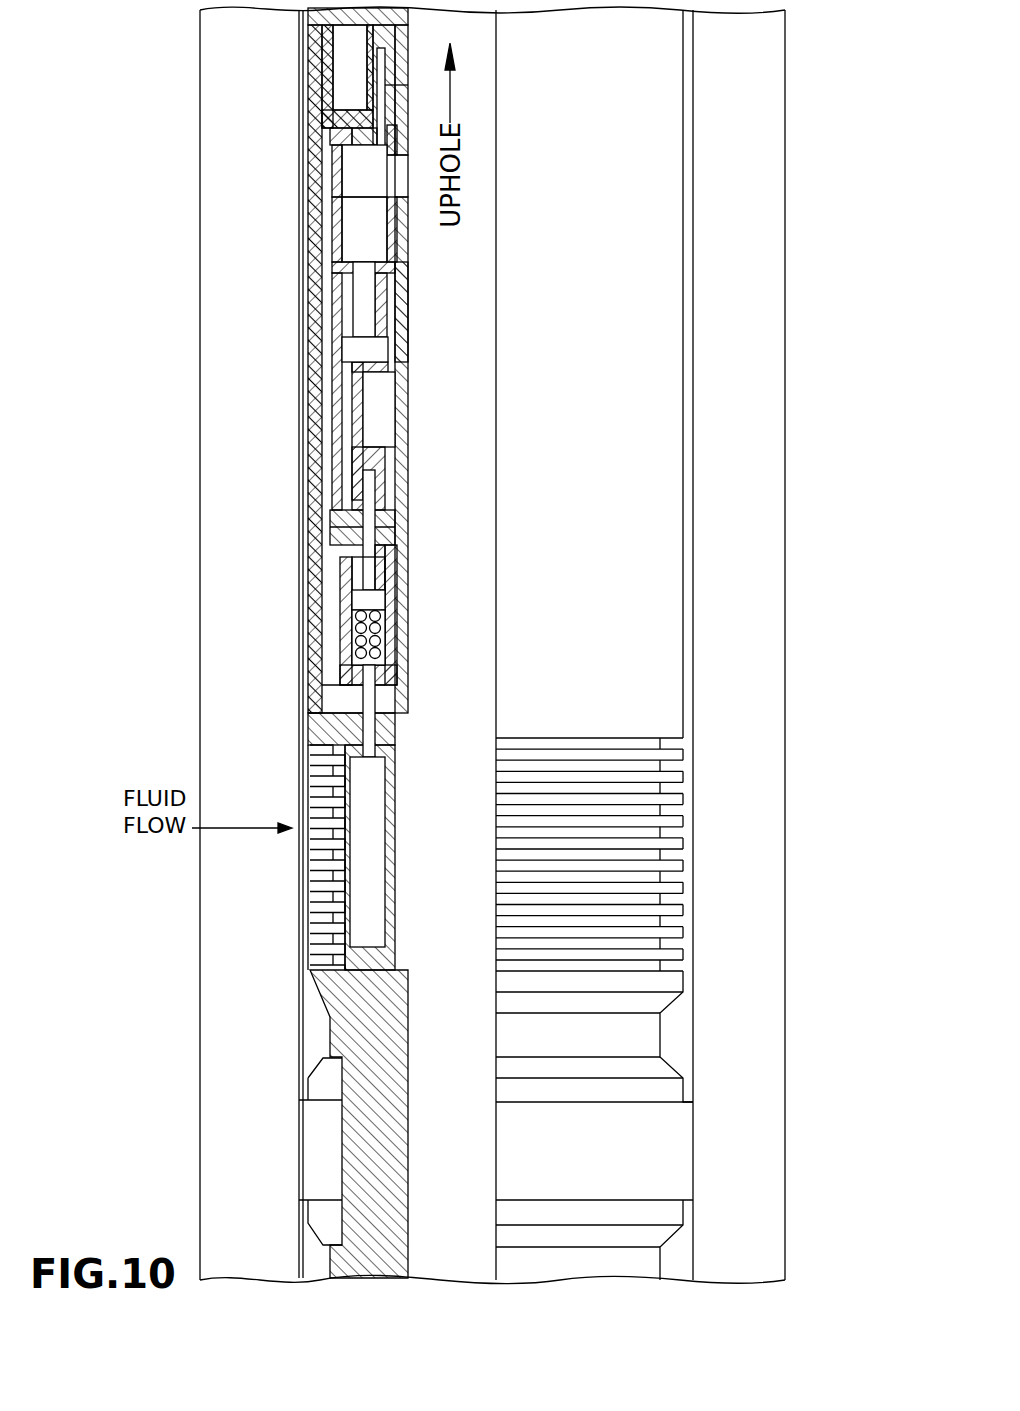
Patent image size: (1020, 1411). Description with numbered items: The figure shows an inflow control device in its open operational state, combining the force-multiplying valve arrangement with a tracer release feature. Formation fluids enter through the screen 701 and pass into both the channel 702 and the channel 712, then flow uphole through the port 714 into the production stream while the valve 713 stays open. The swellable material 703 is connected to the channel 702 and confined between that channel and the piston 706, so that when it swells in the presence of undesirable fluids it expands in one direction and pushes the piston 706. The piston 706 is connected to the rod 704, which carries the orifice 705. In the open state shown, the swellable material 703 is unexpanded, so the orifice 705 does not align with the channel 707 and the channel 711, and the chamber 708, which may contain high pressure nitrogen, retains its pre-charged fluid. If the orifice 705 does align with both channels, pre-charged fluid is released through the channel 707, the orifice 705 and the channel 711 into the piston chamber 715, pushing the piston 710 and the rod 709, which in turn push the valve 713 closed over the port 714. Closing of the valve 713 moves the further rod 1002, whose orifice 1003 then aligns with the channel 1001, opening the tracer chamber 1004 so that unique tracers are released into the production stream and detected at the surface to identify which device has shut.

The screen 701 is at (310, 945).
The channel 702 is at (365, 675).
The swellable material 703 is at (355, 640).
The rod 704 is at (370, 560).
The orifice 705 is at (370, 525).
The piston 706 is at (370, 600).
The channel 707 is at (400, 470).
The chamber 708 is at (385, 385).
The rod 709 is at (360, 305).
The piston 710 is at (345, 338).
The channel 711 is at (345, 375).
The channel 712 is at (330, 232).
The valve 713 is at (360, 210).
The port 714 is at (335, 170).
The piston chamber 715 is at (400, 305).
The channel 1001 is at (402, 85).
The further rod 1002 is at (385, 145).
The orifice 1003 is at (385, 105).
The tracer chamber 1004 is at (348, 38).